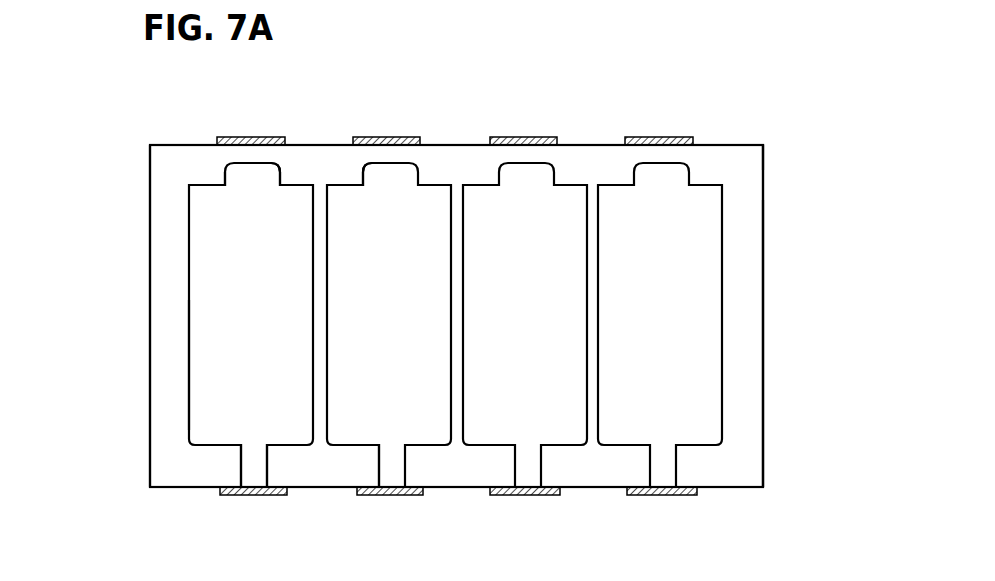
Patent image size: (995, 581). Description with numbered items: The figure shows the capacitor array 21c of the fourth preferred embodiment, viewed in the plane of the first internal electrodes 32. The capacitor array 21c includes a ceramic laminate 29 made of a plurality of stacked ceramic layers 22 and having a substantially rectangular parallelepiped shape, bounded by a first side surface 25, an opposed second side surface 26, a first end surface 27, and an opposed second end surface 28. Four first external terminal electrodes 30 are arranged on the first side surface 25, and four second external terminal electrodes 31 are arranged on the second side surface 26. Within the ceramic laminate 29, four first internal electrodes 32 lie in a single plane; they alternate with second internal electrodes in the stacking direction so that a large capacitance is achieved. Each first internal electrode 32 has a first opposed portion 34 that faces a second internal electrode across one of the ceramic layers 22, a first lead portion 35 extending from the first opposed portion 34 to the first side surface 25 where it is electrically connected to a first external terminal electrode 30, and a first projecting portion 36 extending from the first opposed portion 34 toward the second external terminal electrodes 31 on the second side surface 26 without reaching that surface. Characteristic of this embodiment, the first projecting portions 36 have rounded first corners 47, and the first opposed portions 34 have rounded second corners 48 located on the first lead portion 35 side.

The capacitor array 21c is at (82, 95).
The ceramic layers 22 is at (747, 205).
The first side surface 25 is at (585, 493).
The second side surface 26 is at (583, 143).
The first end surface 27 is at (150, 253).
The second end surface 28 is at (763, 280).
The ceramic laminate 29 is at (765, 141).
The first external terminal electrodes 30 is at (503, 494).
The second external terminal electrodes 31 is at (515, 140).
The first internal electrodes 32 is at (186, 325).
The first opposed portions 34 is at (208, 371).
The first lead portions 35 is at (253, 465).
The first projecting portions 36 is at (225, 177).
The rounded first corners 47 is at (362, 175).
The rounded second corners 48 is at (337, 446).